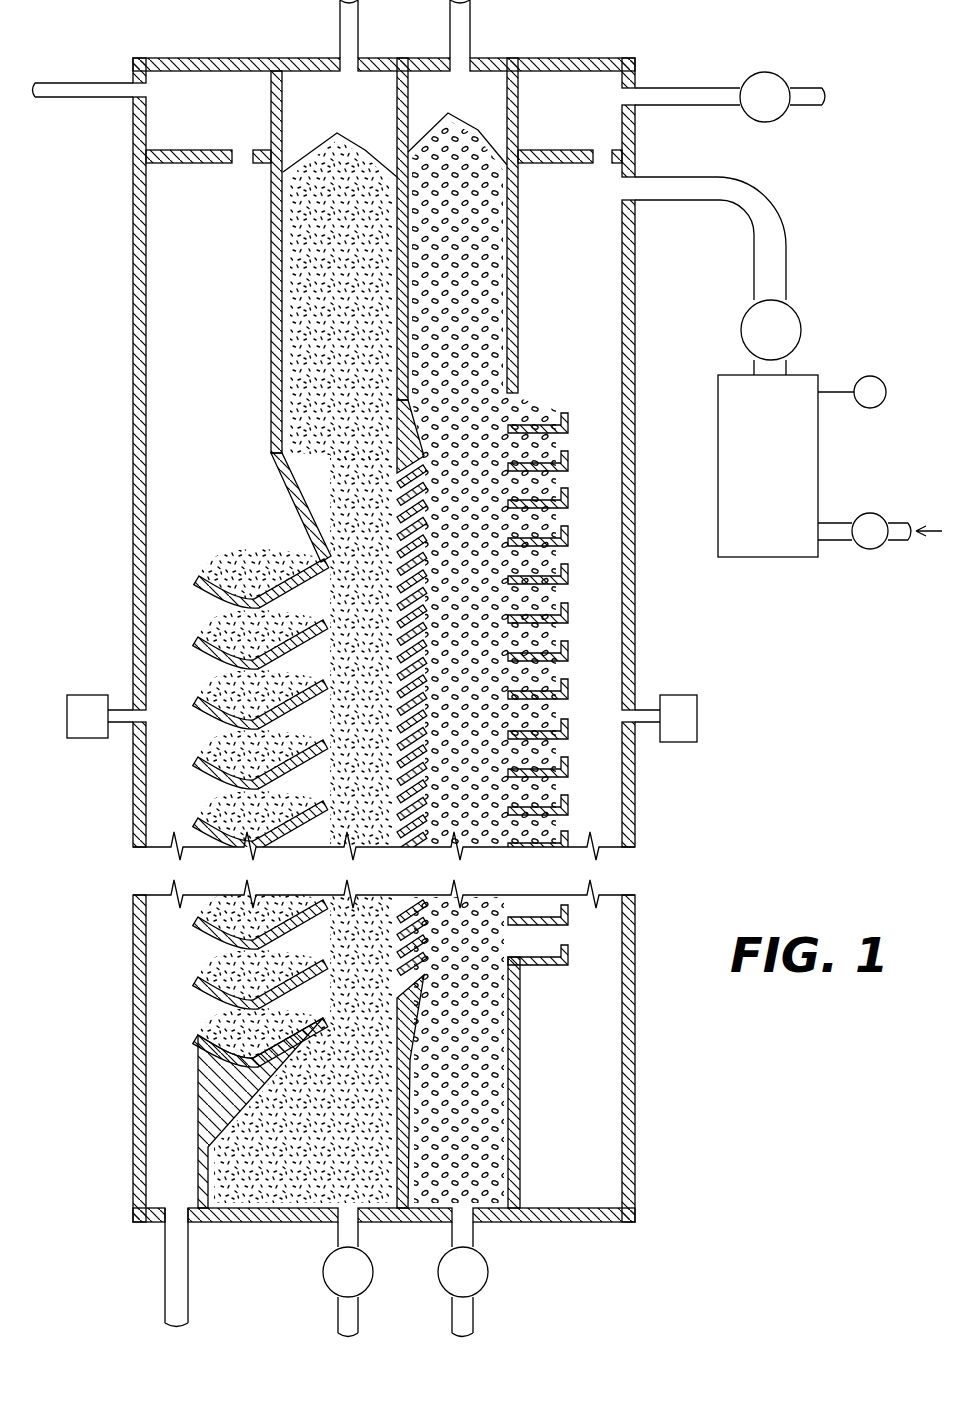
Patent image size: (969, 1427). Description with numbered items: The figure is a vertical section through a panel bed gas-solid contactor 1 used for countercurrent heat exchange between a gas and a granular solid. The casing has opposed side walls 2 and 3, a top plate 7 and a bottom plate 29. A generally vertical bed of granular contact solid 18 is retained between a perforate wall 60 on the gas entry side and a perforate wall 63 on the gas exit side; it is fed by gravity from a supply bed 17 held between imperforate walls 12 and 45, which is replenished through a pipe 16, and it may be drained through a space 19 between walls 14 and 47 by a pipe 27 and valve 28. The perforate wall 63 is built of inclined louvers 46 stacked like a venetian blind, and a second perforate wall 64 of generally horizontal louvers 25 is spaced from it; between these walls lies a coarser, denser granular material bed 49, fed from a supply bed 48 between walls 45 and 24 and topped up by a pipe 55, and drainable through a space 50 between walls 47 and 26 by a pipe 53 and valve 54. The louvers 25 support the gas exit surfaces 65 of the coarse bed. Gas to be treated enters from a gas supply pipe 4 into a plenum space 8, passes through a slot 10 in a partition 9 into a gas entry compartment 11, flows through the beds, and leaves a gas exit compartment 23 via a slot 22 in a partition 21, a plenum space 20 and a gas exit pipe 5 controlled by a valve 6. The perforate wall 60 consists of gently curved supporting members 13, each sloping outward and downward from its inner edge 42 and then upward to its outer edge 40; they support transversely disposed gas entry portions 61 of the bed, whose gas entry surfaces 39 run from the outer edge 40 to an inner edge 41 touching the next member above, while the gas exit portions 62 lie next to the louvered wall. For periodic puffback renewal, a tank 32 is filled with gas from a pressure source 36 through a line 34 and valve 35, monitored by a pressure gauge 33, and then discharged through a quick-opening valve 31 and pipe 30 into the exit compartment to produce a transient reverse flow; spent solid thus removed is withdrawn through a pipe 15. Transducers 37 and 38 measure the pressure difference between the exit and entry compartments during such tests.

The panel bed gas-solid contactor 1 is at (128, 428).
The side wall 2 is at (635, 452).
The side wall 3 is at (133, 283).
The gas supply pipe 4 is at (116, 83).
The gas exit pipe 5 is at (686, 88).
The valve 6 is at (781, 80).
The top plate 7 is at (258, 58).
The plenum space 8 is at (180, 80).
The partition 9 is at (196, 150).
The slot 10 is at (243, 165).
The gas entry compartment 11 is at (165, 345).
The imperforate wall 12 is at (271, 312).
The supporting member 13 is at (205, 582).
The wall 14 is at (198, 1162).
The pipe 15 is at (170, 1280).
The pipe 16 is at (340, 22).
The supply bed 17 is at (298, 383).
The bed of granular contact solid 18 is at (374, 589).
The space 19 is at (346, 1159).
The plenum space 20 is at (597, 87).
The partition 21 is at (574, 150).
The slot 22 is at (600, 170).
The gas exit compartment 23 is at (585, 325).
The imperforate wall 24 is at (520, 272).
The louvers 25 is at (572, 502).
The wall 26 is at (520, 1148).
The pipe 27 is at (362, 1240).
The valve 28 is at (372, 1286).
The bottom plate 29 is at (268, 1222).
The pipe 30 is at (690, 196).
The quick-opening valve 31 is at (797, 326).
The tank 32 is at (820, 462).
The pressure gauge 33 is at (874, 378).
The line 34 is at (832, 558).
The valve 35 is at (873, 513).
The source of gas under pressure 36 is at (928, 540).
The transducer 37 is at (90, 695).
The transducer 38 is at (680, 695).
The gas entry surface 39 is at (212, 754).
The outer edge 40 is at (205, 638).
The inner edge 41 is at (250, 655).
The inner edge 42 is at (320, 630).
The imperforate wall 45 is at (412, 250).
The louvers 46 is at (425, 505).
The wall 47 is at (408, 1165).
The supply bed 48 is at (500, 356).
The granular material bed 49 is at (476, 569).
The space 50 is at (490, 998).
The pipe 53 is at (477, 1240).
The valve 54 is at (492, 1285).
The pipe 55 is at (450, 30).
The perforate wall 60 is at (200, 912).
The gas entry portions 61 is at (215, 790).
The gas exit portions 62 is at (355, 809).
The perforate wall 63 is at (440, 732).
The perforate wall 64 is at (570, 740).
The gas exit surfaces 65 is at (548, 682).